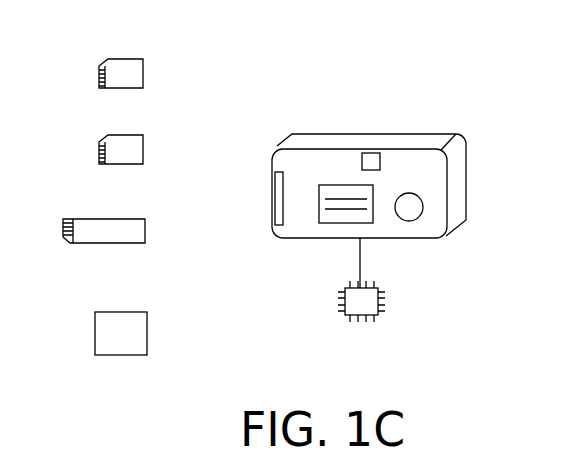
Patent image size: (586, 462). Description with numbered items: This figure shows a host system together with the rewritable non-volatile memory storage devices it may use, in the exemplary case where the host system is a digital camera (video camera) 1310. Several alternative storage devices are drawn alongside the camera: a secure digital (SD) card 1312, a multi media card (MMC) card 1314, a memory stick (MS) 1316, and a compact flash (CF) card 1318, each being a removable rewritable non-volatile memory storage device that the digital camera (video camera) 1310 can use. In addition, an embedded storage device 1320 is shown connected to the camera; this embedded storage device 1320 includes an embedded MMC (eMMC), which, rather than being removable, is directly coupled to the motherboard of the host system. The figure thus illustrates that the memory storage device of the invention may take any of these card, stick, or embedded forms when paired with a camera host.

The digital camera (video camera) 1310 is at (467, 172).
The secure digital (SD) card 1312 is at (143, 64).
The multi media card (MMC) card 1314 is at (143, 140).
The memory stick (MS) 1316 is at (145, 231).
The compact flash (CF) card 1318 is at (147, 327).
The embedded storage device 1320 is at (382, 300).